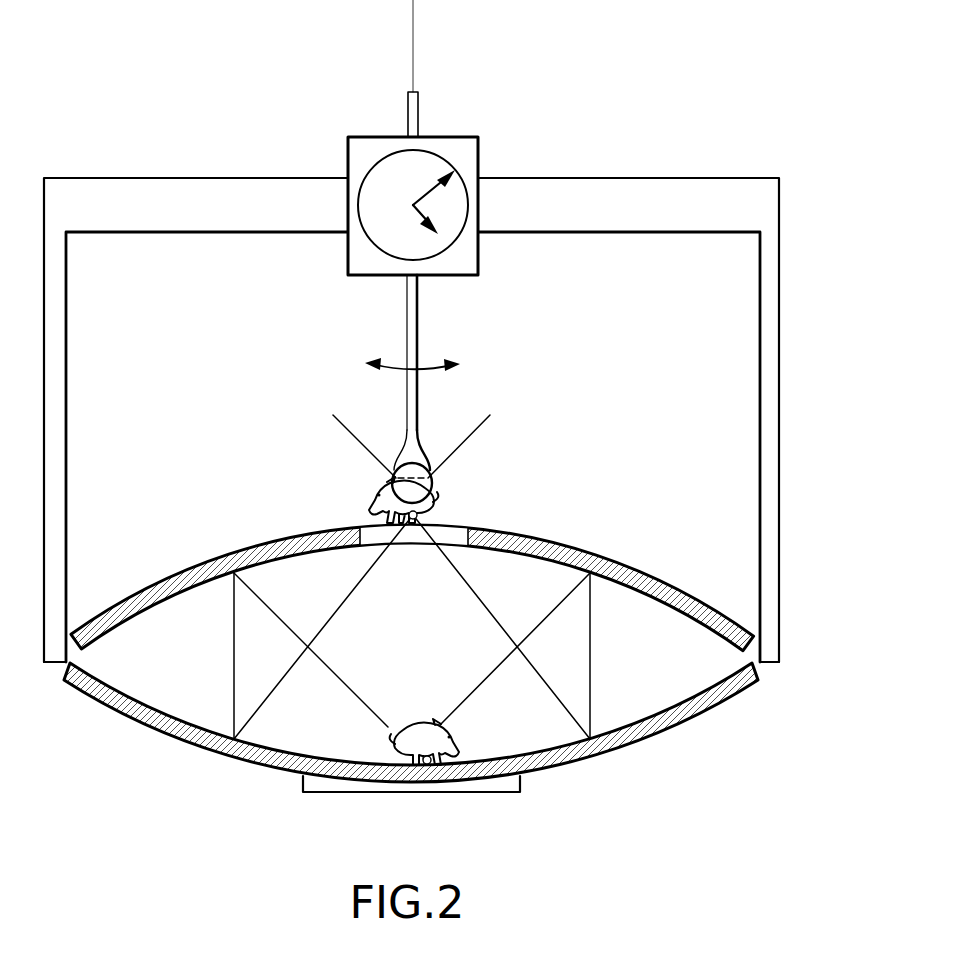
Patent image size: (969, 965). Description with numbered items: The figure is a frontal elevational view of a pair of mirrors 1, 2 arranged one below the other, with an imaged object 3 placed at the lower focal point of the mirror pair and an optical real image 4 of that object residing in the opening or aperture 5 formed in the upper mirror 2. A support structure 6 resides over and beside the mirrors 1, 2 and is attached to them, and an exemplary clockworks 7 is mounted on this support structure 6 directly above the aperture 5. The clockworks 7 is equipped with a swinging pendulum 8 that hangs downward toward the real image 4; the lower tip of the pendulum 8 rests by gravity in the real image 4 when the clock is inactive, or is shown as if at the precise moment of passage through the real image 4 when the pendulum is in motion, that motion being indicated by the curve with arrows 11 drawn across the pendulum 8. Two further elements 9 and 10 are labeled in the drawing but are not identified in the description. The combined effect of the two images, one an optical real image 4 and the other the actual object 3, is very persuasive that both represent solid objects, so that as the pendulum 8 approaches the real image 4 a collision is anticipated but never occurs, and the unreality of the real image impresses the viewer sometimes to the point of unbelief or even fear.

The mirror 1 is at (568, 767).
The mirror 2 is at (622, 562).
The imaged object 3 is at (386, 733).
The real image 4 is at (441, 486).
The opening 5 is at (445, 547).
The support structure 6 is at (203, 178).
The clockworks 7 is at (456, 268).
The swinging pendulum 8 is at (418, 308).
The shaft 9 is at (417, 115).
The light source 10 is at (400, 468).
The curve with arrows 11 is at (430, 362).